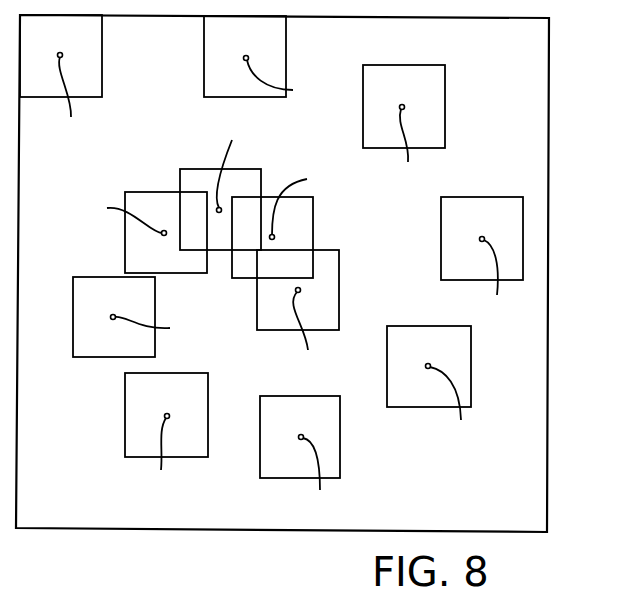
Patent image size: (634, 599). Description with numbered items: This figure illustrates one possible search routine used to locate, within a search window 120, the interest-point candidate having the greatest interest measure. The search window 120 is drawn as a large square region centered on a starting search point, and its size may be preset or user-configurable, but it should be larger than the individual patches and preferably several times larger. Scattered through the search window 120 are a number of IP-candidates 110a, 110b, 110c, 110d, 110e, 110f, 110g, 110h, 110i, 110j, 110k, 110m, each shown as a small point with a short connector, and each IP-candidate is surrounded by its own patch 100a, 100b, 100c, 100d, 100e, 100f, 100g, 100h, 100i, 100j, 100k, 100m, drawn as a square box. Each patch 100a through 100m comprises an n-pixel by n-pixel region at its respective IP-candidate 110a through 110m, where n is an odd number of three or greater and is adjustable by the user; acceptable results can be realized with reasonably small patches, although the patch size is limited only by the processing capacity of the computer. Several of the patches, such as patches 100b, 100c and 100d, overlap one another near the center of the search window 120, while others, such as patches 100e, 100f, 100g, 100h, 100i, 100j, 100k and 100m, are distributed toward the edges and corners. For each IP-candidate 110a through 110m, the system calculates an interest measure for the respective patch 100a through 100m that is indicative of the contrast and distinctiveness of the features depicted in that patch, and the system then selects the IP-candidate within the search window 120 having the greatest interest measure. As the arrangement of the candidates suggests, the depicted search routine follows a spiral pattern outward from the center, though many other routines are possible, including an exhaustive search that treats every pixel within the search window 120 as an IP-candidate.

The search window 120 is at (549, 82).
The patch 100a is at (377, 268).
The patch 100b is at (313, 233).
The patch 100c is at (250, 169).
The patch 100d is at (153, 192).
The patch 100e is at (115, 277).
The patch 100f is at (125, 402).
The patch 100g is at (260, 455).
The patch 100h is at (387, 393).
The patch 100i is at (441, 238).
The patch 100j is at (445, 126).
The patch 100k is at (286, 58).
The patch 100m is at (102, 40).
The IP-candidate 110a is at (309, 334).
The IP-candidate 110b is at (318, 203).
The IP-candidate 110c is at (235, 164).
The IP-candidate 110d is at (106, 216).
The IP-candidate 110e is at (171, 329).
The IP-candidate 110f is at (161, 455).
The IP-candidate 110g is at (319, 477).
The IP-candidate 110h is at (460, 407).
The IP-candidate 110i is at (497, 278).
The IP-candidate 110j is at (407, 147).
The IP-candidate 110k is at (298, 80).
The IP-candidate 110m is at (81, 100).